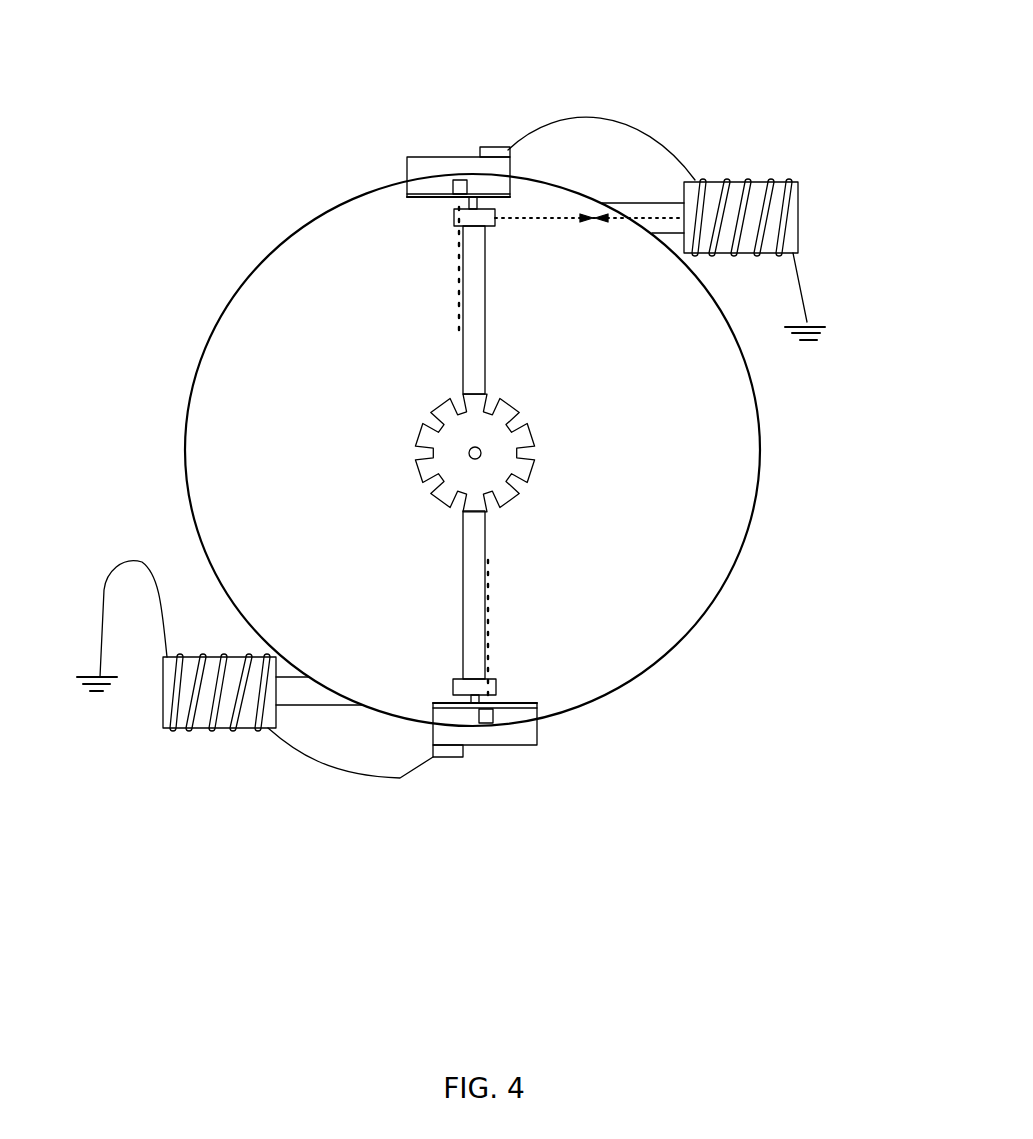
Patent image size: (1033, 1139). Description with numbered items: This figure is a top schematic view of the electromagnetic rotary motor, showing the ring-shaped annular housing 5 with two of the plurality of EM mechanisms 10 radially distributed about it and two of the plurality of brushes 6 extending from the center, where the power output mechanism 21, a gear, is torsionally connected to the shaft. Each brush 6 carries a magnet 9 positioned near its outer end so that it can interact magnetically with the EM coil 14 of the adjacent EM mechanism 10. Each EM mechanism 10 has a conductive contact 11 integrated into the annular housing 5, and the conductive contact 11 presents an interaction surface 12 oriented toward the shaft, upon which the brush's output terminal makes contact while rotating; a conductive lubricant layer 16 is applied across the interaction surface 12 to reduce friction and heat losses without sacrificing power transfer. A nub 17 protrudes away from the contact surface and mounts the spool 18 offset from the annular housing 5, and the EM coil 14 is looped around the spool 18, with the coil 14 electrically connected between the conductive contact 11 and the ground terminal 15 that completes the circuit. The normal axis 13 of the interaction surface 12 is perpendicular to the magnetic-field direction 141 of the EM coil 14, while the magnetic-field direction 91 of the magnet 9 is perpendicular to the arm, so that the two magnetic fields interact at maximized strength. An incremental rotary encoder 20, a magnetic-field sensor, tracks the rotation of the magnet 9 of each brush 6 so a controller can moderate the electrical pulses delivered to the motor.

The annular housing 5 is at (196, 372).
The plurality of brushes 6 is at (503, 366).
The magnet 9 is at (462, 215).
The electromagnetic (EM) mechanism 10 is at (463, 426).
The conductive contact 11 is at (413, 172).
The interaction surface 12 is at (413, 198).
The normal axis 13 is at (459, 300).
The EM coil 14 is at (772, 177).
The magnetic-field direction 141 is at (669, 216).
The ground terminal 15 is at (810, 343).
The conductive lubricant layer 16 is at (497, 205).
The nub 17 is at (650, 210).
The spool 18 is at (788, 208).
The incremental rotary encoder 20 is at (460, 180).
The power output mechanism 21 is at (442, 457).
The magnetic-field direction 91 is at (547, 220).